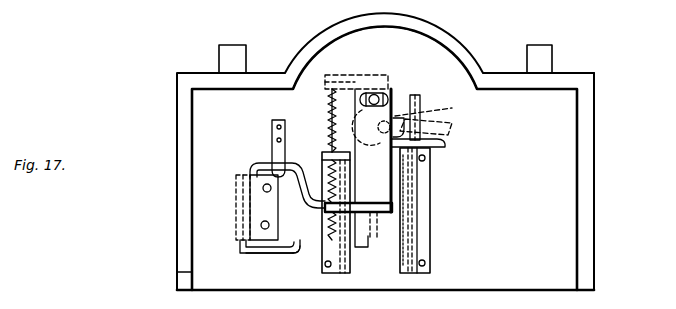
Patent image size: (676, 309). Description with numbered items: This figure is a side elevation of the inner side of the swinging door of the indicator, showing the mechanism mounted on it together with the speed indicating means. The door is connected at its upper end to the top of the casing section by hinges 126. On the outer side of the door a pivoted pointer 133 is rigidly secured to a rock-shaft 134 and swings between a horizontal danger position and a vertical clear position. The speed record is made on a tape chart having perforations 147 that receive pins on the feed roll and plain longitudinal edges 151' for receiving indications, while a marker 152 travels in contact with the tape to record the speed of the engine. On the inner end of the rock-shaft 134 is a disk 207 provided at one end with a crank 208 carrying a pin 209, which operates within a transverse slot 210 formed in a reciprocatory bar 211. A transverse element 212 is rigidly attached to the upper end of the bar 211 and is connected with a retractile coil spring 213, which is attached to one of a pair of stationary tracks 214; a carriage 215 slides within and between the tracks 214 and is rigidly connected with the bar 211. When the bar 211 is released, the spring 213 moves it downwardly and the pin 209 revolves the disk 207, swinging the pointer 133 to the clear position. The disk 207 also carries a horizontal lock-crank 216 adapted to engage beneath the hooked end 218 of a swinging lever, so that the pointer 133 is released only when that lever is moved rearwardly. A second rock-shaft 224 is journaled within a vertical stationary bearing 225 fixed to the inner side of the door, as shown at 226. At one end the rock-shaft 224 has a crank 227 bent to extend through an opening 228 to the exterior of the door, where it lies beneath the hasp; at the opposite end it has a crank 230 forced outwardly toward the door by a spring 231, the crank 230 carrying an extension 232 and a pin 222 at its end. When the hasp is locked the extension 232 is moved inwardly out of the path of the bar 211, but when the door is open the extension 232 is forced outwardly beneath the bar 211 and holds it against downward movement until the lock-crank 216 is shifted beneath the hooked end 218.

The hinges 126 is at (231, 54).
The pointer 133 is at (448, 138).
The rock-shaft 134 is at (420, 97).
The perforations 147 is at (385, 161).
The side wall 151' is at (541, 191).
The marker 152 is at (385, 299).
The disk 207 is at (392, 113).
The crank 208 is at (330, 112).
The pin 209 is at (392, 89).
The transverse slot 210 is at (368, 92).
The reciprocatory bar 211 is at (387, 183).
The transverse element 212 is at (352, 75).
The retractile coil spring 213 is at (330, 137).
The stationary tracks 214 is at (323, 258).
The carriage 215 is at (392, 236).
The lock-crank 216 is at (445, 146).
The hooked end 218 is at (452, 119).
The pin 222 is at (380, 230).
The rock-shaft 224 is at (248, 250).
The vertical stationary bearing 225 is at (246, 211).
The fastening of bearing 226 is at (262, 188).
The crank 227 is at (262, 255).
The opening 228 is at (305, 237).
The crank 230 is at (252, 164).
The spring 231 is at (272, 150).
The extension 232 is at (371, 230).